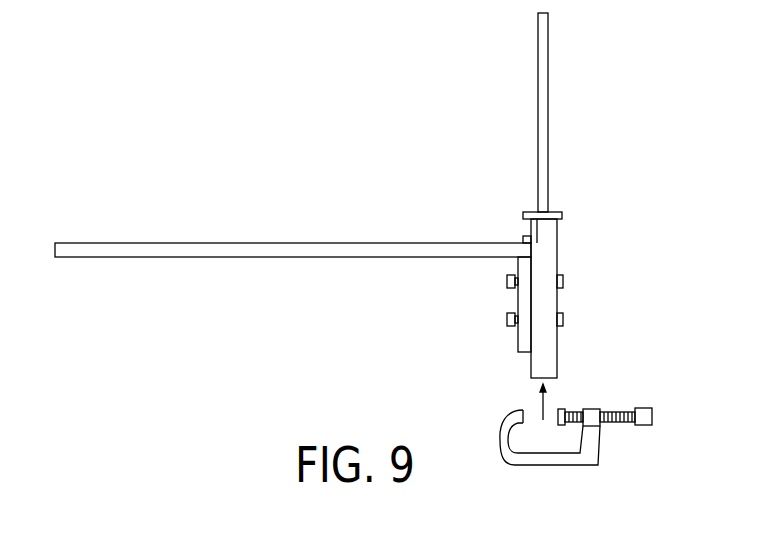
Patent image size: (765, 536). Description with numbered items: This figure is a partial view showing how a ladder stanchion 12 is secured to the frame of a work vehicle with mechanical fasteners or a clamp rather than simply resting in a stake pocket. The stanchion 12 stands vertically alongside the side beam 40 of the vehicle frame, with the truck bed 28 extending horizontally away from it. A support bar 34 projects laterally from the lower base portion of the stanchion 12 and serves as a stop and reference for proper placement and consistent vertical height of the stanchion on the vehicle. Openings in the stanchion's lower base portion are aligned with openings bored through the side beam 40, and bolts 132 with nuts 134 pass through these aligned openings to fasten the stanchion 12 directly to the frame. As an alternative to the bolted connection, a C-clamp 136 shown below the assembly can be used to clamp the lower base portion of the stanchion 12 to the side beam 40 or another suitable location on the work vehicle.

The ladder stanchion 12 is at (609, 198).
The truck bed 28 is at (293, 243).
The support bar 34 is at (523, 238).
The side beam 40 is at (525, 348).
The bolts 132 is at (563, 282).
The nuts 134 is at (507, 282).
The C-clamp 136 is at (502, 440).